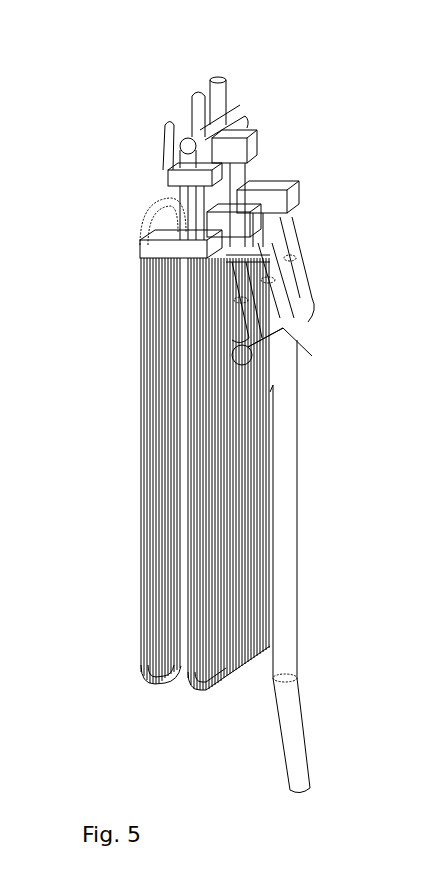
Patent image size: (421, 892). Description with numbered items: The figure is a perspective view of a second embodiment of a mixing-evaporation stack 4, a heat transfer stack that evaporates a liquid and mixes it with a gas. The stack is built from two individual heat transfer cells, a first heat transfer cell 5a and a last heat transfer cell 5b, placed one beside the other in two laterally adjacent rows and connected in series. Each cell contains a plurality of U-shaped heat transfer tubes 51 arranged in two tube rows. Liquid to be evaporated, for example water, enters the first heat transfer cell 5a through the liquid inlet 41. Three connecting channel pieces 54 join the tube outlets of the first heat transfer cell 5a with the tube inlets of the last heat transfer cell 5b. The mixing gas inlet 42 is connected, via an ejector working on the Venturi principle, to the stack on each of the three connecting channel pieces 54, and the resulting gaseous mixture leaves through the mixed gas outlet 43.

The mixing-evaporation stack 4 is at (120, 435).
The first heat transfer cell 5a is at (155, 686).
The last heat transfer cell 5b is at (197, 695).
The liquid inlet 41 is at (167, 127).
The mixing gas inlet 42 is at (197, 92).
The mixed gas outlet 43 is at (275, 367).
The heat transfer tubes 51 is at (190, 340).
The connecting channel pieces 54 is at (183, 178).